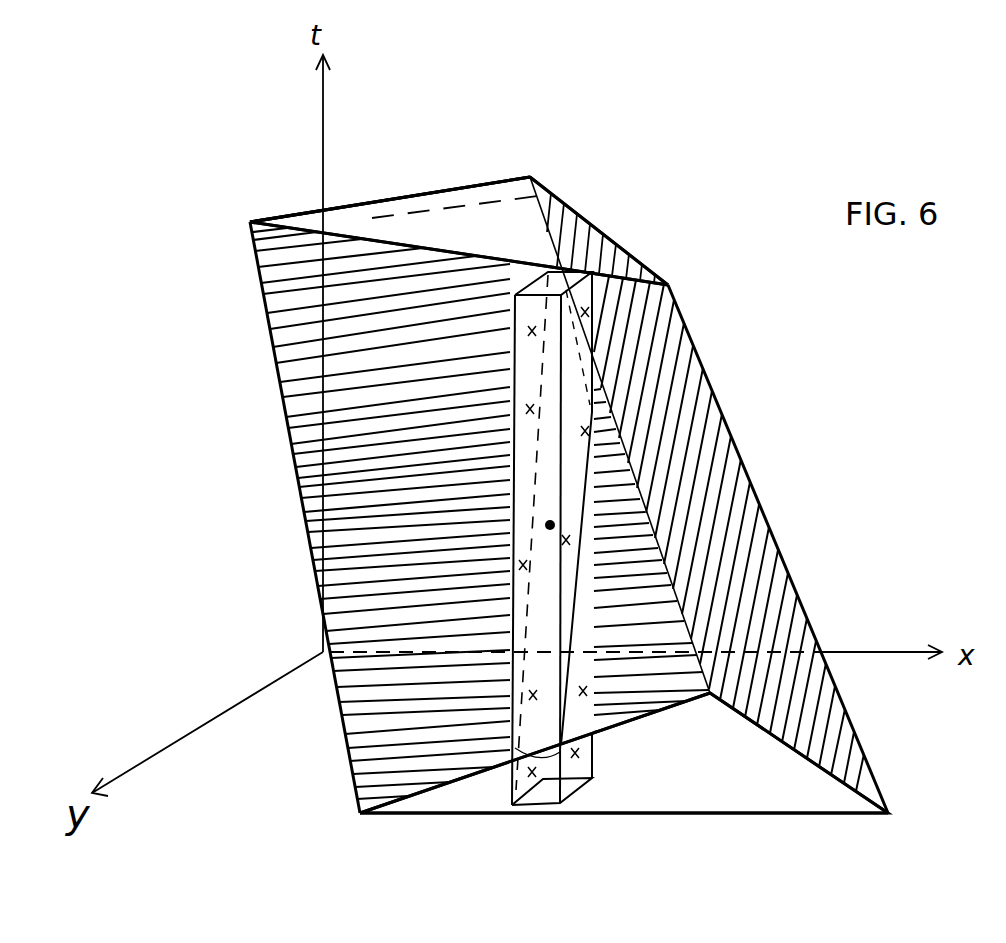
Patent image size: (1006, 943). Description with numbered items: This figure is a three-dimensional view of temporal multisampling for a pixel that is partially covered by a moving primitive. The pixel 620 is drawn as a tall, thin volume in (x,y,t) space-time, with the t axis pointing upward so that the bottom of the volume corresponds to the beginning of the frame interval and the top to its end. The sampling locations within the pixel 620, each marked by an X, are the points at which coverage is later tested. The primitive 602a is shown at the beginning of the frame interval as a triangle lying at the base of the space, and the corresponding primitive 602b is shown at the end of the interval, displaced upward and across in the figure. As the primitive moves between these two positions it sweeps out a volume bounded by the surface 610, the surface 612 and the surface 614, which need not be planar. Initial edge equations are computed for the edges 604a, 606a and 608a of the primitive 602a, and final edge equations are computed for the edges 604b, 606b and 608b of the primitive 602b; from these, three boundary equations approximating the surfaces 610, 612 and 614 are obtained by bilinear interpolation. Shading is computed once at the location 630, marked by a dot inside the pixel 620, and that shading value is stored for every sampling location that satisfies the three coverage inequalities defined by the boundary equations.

The primitive at t=0 602a is at (700, 793).
The primitive at t=1 602b is at (414, 215).
The edge 604a is at (503, 817).
The edge 604b is at (441, 247).
The edge 606a is at (614, 725).
The edge 606b is at (452, 197).
The edge 608a is at (780, 742).
The edge 608b is at (580, 215).
The surface 610 is at (366, 716).
The surface 612 is at (700, 402).
The surface 614 is at (376, 222).
The pixel 620 is at (585, 262).
The location 630 is at (547, 525).